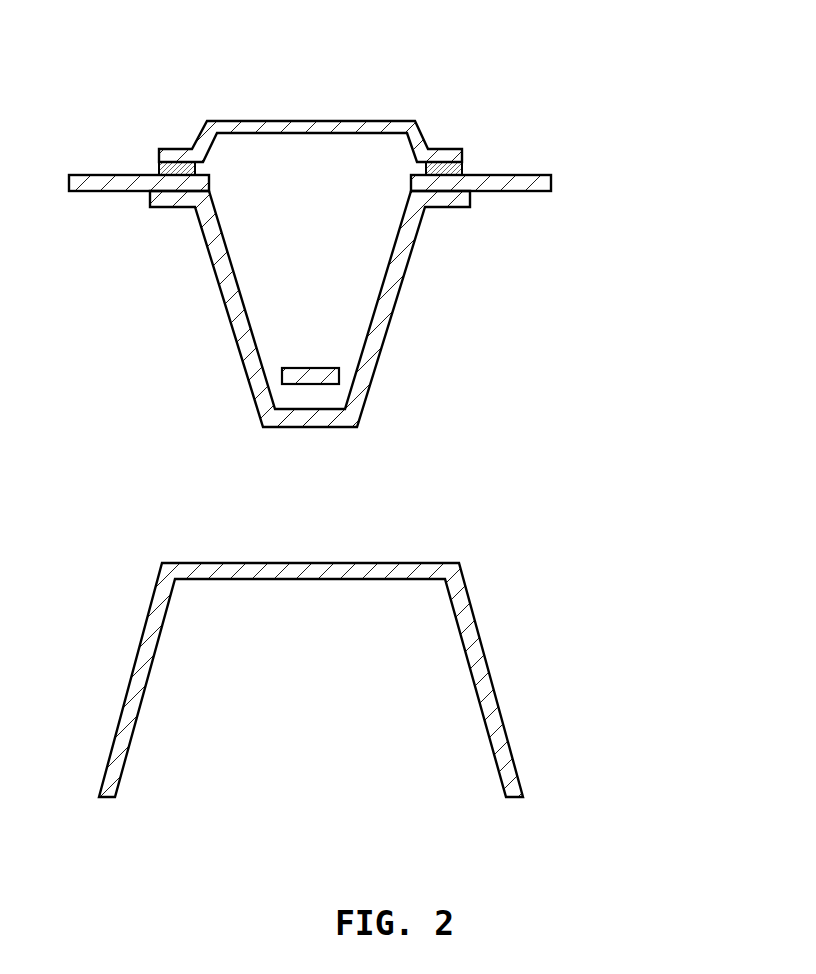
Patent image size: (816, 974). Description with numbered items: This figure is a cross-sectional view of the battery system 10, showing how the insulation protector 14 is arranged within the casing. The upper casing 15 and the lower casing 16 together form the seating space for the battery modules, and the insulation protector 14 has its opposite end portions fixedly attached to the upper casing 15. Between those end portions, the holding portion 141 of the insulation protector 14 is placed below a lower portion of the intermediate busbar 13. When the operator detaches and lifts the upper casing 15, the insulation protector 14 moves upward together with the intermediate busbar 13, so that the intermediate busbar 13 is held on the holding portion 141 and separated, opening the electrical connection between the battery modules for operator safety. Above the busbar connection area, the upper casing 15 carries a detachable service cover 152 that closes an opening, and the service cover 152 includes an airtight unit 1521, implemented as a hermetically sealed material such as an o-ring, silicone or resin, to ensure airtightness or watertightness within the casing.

The battery system 10 is at (700, 48).
The intermediate busbar 13 is at (335, 378).
The insulation protector 14 is at (397, 292).
The holding portion 141 is at (340, 427).
The upper casing 15 is at (538, 180).
The service cover 152 is at (298, 128).
The airtight unit 1521 is at (443, 167).
The lower casing 16 is at (472, 625).